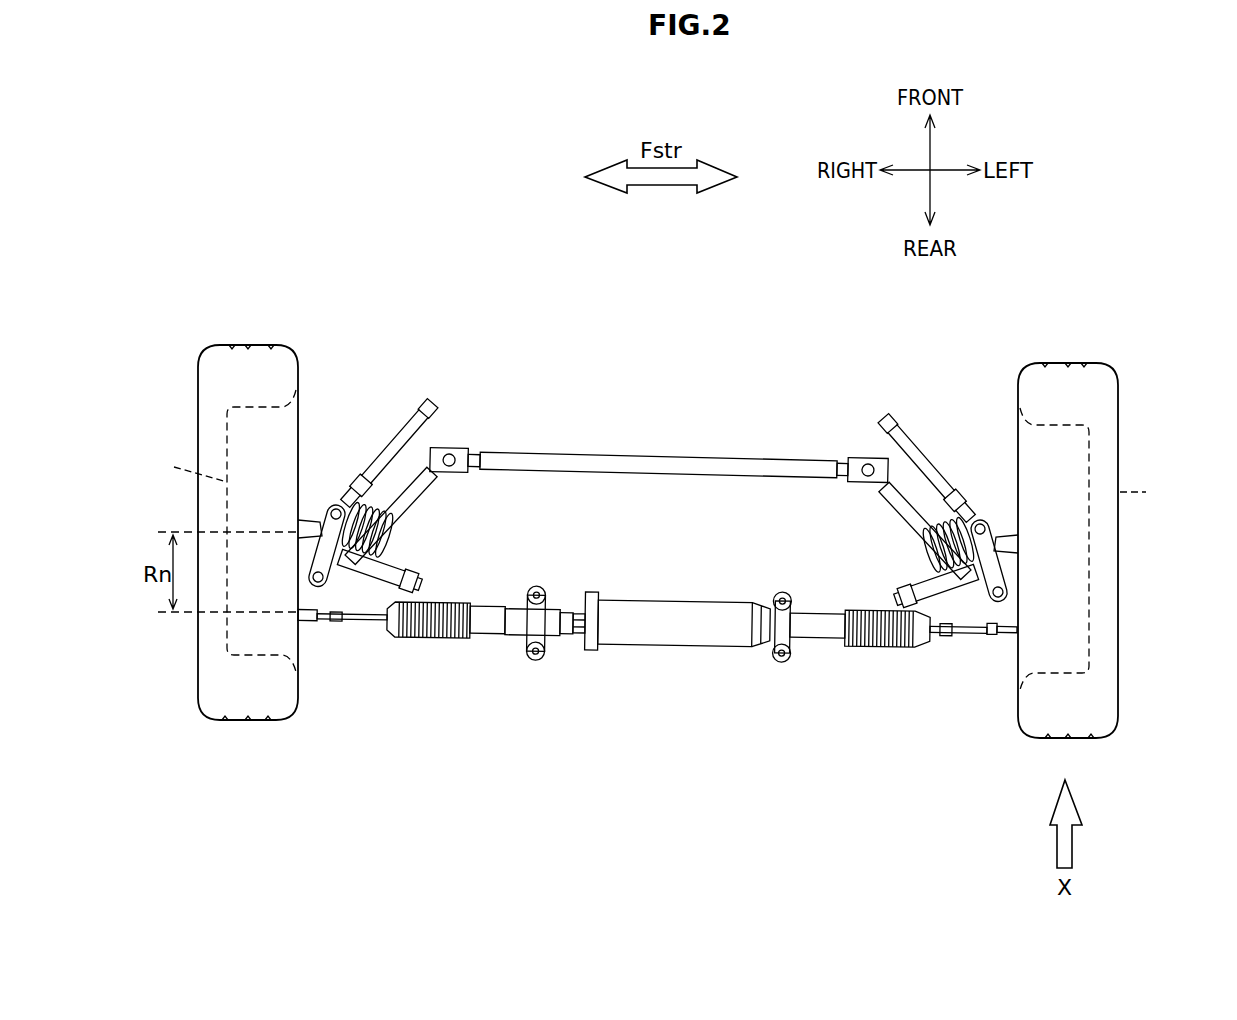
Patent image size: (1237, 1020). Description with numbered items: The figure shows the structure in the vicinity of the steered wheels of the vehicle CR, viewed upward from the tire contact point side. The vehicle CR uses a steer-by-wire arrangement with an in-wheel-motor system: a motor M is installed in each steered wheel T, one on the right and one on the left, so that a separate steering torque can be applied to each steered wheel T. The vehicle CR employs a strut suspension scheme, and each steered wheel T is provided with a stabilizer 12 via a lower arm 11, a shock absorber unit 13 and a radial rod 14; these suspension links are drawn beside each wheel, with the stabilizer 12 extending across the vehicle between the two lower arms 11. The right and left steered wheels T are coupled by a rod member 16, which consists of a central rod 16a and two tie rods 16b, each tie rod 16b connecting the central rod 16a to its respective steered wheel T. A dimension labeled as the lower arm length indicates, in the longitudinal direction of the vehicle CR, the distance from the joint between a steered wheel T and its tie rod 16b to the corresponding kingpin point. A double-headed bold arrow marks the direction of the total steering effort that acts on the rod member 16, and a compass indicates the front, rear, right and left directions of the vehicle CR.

The lower arm 11 is at (323, 548).
The stabilizer 12 is at (420, 488).
The shock absorber unit 13 is at (378, 507).
The radial rod 14 is at (422, 413).
The rod member 16 is at (656, 685).
The central rod 16a is at (683, 674).
The tie rod 16b is at (663, 679).
The steered wheel T is at (224, 312).
The motor M is at (653, 481).
The vehicle CR is at (492, 175).